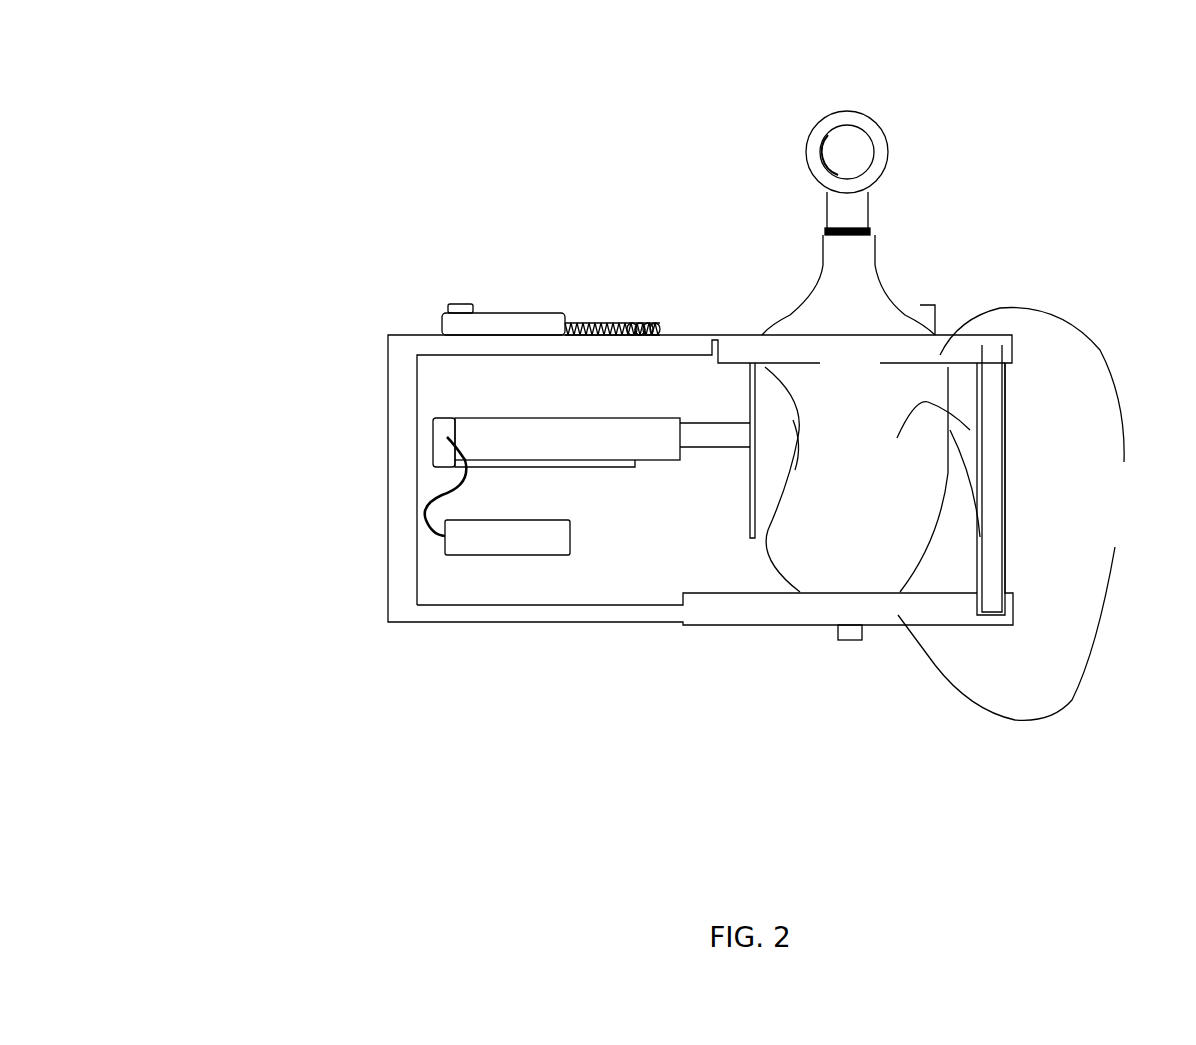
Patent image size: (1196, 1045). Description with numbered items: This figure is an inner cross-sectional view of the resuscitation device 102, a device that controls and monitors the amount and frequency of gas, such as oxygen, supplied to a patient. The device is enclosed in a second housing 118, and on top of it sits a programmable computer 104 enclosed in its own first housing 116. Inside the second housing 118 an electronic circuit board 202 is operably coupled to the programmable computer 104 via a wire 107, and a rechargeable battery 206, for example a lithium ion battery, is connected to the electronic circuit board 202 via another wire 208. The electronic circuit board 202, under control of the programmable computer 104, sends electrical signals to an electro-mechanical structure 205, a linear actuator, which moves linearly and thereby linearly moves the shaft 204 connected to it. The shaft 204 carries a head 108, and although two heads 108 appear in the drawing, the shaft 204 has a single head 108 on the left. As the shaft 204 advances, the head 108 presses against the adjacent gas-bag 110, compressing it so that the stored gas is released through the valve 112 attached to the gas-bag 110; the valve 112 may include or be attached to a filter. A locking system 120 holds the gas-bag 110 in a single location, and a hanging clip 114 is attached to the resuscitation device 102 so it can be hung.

The resuscitation device 102 is at (220, 107).
The programmable computer 104 is at (452, 305).
The wire 107 is at (633, 325).
The head 108 is at (768, 487).
The gas-bag 110 is at (853, 282).
The valve 112 is at (847, 135).
The hanging clip 114 is at (930, 335).
The first housing 116 is at (537, 322).
The second housing 118 is at (403, 418).
The locking system 120 is at (1016, 514).
The electronic circuit board 202 is at (443, 438).
The shaft 204 is at (735, 420).
The electro-mechanical structure 205 is at (582, 437).
The rechargeable battery 206 is at (537, 538).
The wire 208 is at (453, 490).